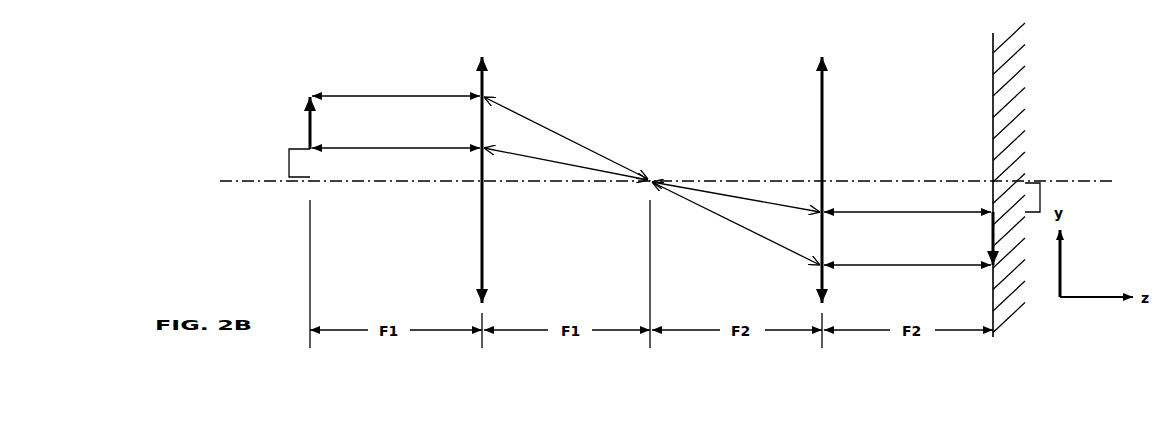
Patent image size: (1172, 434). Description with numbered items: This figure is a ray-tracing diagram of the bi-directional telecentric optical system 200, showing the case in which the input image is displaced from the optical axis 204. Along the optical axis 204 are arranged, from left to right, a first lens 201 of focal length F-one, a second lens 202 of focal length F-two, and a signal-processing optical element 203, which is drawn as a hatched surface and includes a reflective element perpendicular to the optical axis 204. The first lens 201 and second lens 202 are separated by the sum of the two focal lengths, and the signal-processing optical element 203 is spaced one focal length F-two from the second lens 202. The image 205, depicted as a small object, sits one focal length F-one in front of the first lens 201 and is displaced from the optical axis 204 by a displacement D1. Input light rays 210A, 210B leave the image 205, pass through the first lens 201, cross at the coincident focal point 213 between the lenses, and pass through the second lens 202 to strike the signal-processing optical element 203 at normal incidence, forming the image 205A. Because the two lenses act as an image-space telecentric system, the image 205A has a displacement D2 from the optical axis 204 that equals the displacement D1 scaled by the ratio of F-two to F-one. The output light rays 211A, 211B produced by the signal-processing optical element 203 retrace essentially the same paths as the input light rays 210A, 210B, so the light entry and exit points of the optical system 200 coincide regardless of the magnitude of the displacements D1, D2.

The optical system 200 is at (320, 70).
The first lens 201 is at (484, 92).
The second lens 202 is at (820, 92).
The signal-processing optical element 203 is at (993, 70).
The optical axis 204 is at (252, 182).
The image 205 is at (308, 132).
The image 205A is at (990, 232).
The input light ray 210A is at (651, 170).
The output light ray 211A is at (388, 96).
The input light ray 210B is at (651, 187).
The output light ray 211B is at (372, 149).
The coincident focal point 213 is at (652, 162).
The displacement D1 is at (289, 163).
The displacement D2 is at (1040, 193).